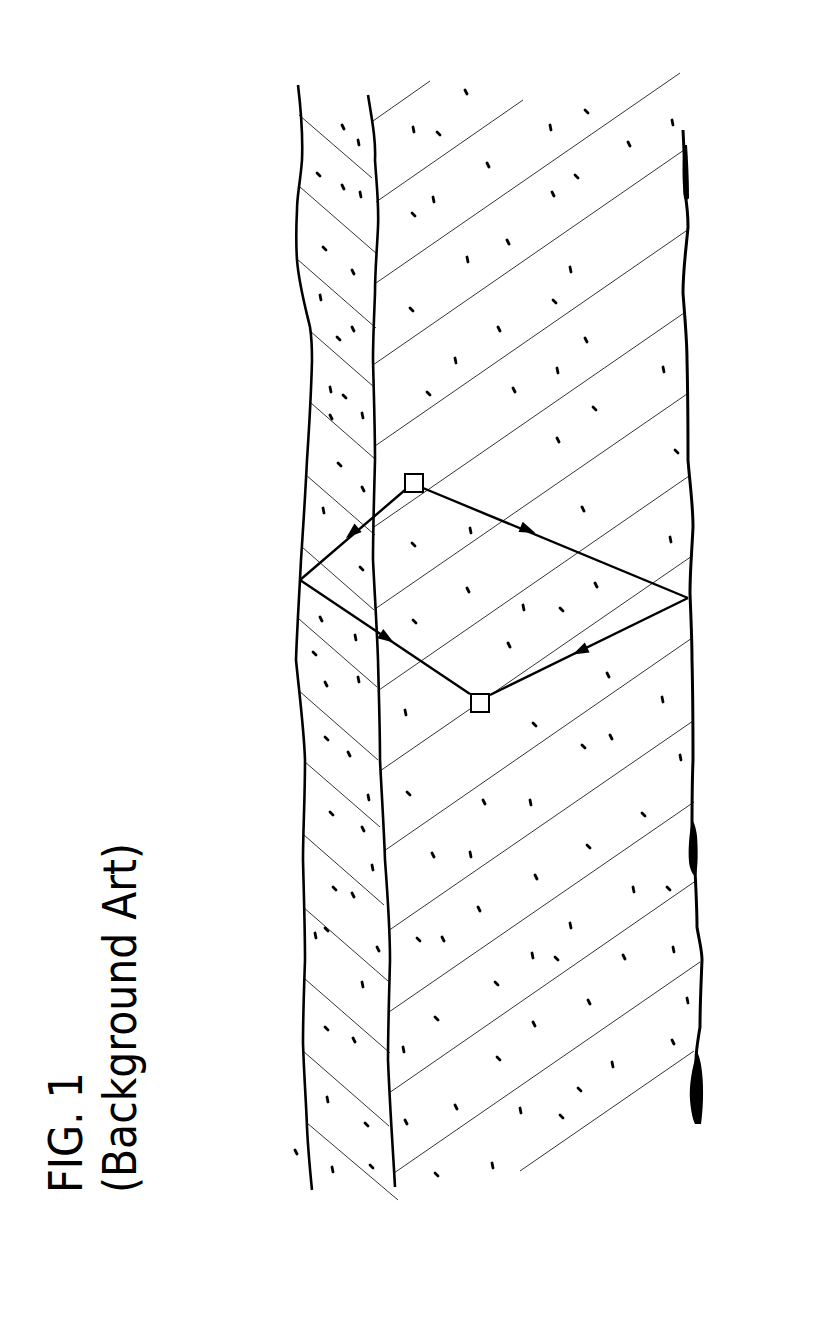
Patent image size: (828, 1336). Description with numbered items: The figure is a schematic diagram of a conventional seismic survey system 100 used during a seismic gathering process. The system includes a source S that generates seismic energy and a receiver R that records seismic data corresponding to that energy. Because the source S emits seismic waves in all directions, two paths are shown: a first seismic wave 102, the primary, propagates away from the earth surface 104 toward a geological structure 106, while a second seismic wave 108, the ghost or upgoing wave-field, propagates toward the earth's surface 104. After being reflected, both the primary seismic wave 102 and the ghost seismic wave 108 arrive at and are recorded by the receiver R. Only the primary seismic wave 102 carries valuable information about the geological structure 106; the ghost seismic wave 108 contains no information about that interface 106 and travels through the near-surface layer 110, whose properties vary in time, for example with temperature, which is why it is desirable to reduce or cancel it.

The seismic survey system 100 is at (152, 575).
The seismic wave 102 is at (485, 512).
The earth surface 104 is at (298, 270).
The geological structure 106 is at (683, 293).
The seismic wave 108 is at (320, 552).
The near-surface layer 110 is at (340, 958).
The source S is at (413, 473).
The receiver R is at (473, 713).